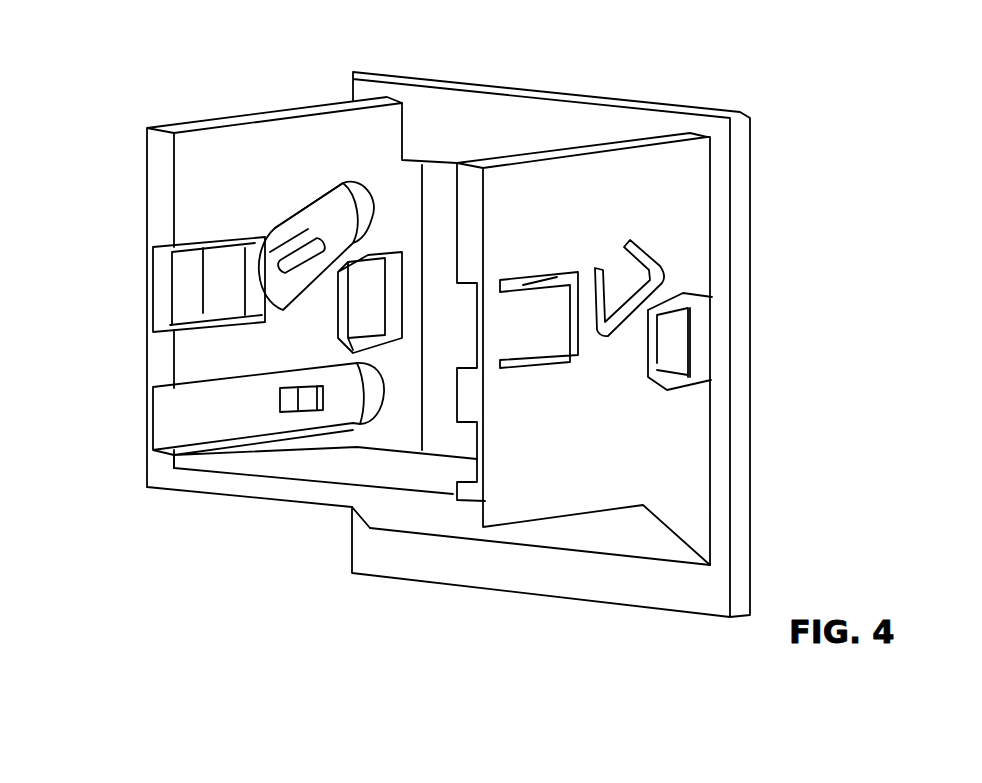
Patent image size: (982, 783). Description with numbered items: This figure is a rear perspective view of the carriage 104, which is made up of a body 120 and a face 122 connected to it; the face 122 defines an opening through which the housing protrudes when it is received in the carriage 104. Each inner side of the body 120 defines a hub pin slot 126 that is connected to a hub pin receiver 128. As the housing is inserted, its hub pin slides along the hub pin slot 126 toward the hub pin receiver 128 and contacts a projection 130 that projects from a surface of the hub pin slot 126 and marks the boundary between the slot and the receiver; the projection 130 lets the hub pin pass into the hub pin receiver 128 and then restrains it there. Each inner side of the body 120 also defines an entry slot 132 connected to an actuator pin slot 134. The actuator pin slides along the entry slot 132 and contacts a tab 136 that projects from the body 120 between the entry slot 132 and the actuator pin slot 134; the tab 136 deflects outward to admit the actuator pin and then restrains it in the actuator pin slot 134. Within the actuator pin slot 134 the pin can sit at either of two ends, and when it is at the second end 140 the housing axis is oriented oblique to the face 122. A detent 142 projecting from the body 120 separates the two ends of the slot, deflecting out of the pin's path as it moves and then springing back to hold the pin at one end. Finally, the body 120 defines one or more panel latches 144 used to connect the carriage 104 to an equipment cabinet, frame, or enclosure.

The carriage 104 is at (134, 72).
The body 120 is at (547, 500).
The face 122 is at (703, 592).
The hub pin slot 126 is at (172, 430).
The hub pin receiver 128 is at (372, 402).
The projection 130 is at (301, 402).
The entry slot 132 is at (170, 288).
The actuator pin slot 134 is at (333, 167).
The tab 136 is at (220, 270).
The second end 140 is at (357, 197).
The detent 142 is at (290, 236).
The panel latch 144 is at (696, 337).